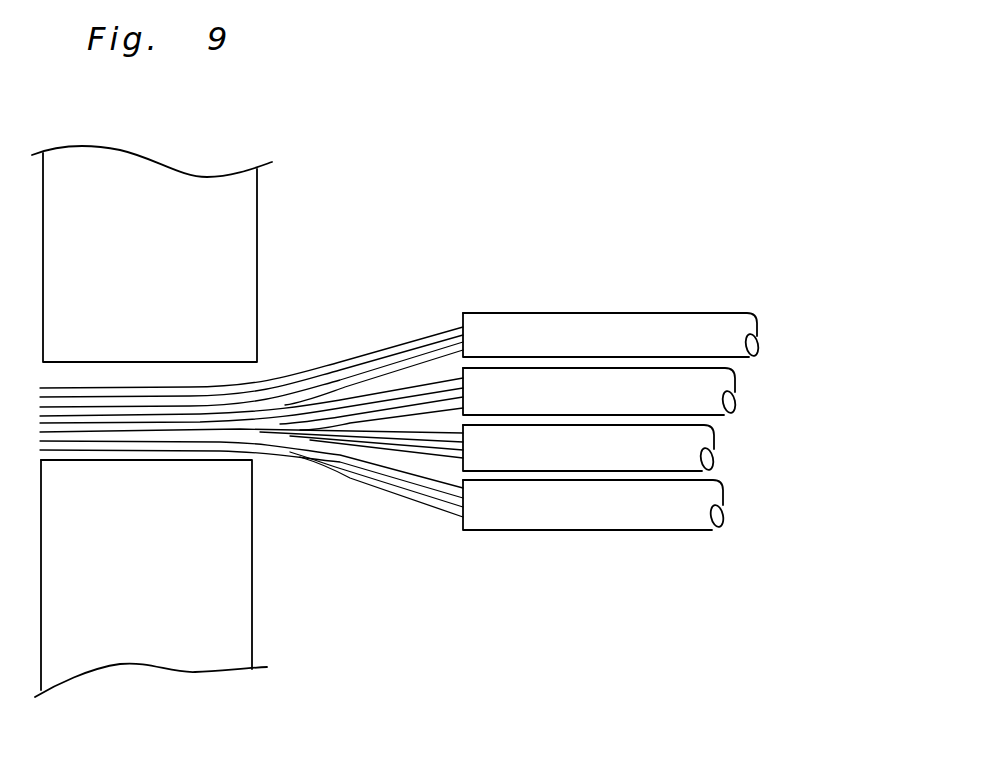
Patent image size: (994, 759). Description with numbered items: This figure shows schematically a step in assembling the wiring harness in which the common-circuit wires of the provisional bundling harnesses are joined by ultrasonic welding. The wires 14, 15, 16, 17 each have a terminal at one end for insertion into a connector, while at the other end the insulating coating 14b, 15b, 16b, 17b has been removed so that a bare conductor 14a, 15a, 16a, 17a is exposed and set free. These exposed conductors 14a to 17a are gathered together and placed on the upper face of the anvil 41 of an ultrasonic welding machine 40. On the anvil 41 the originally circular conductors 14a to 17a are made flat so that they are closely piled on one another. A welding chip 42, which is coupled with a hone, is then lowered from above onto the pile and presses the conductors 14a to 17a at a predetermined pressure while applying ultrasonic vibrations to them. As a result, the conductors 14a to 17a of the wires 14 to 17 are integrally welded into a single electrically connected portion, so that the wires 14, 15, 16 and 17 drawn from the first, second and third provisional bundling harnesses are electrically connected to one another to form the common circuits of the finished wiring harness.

The wire 14 is at (465, 532).
The conductor 14a is at (372, 437).
The insulating coating 14b is at (648, 450).
The wire 15 is at (465, 347).
The conductor 15a is at (402, 397).
The insulating coating 15b is at (700, 392).
The wire 16 is at (467, 325).
The conductor 16a is at (310, 375).
The insulating coating 16b is at (722, 328).
The wire 17 is at (465, 540).
The conductor 17a is at (437, 493).
The insulating coating 17b is at (600, 508).
The ultrasonic welding machine 40 is at (226, 421).
The anvil 41 is at (242, 558).
The welding chip 42 is at (232, 227).